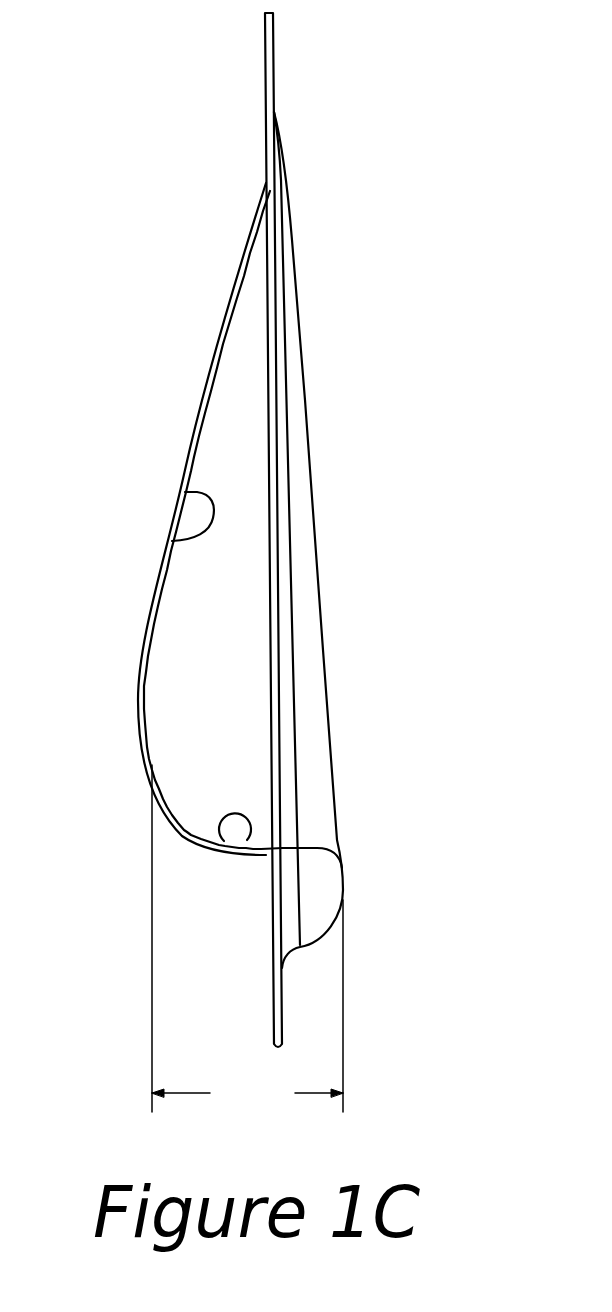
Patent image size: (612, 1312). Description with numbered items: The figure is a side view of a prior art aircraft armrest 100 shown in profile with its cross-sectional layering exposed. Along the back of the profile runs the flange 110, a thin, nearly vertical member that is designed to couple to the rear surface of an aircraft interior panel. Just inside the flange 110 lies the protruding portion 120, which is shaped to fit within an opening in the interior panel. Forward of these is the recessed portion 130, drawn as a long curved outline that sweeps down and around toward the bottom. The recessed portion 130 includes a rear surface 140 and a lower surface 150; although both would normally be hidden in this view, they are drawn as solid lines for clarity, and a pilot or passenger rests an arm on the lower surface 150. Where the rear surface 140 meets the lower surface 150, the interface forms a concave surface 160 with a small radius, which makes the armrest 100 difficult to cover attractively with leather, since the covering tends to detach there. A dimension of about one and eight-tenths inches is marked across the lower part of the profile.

The armrest 100 is at (155, 225).
The flange 110 is at (274, 67).
The protruding portion 120 is at (303, 338).
The recessed portion 130 is at (197, 405).
The rear surface 140 is at (185, 491).
The lower surface 150 is at (221, 821).
The concave surface 160 is at (188, 817).